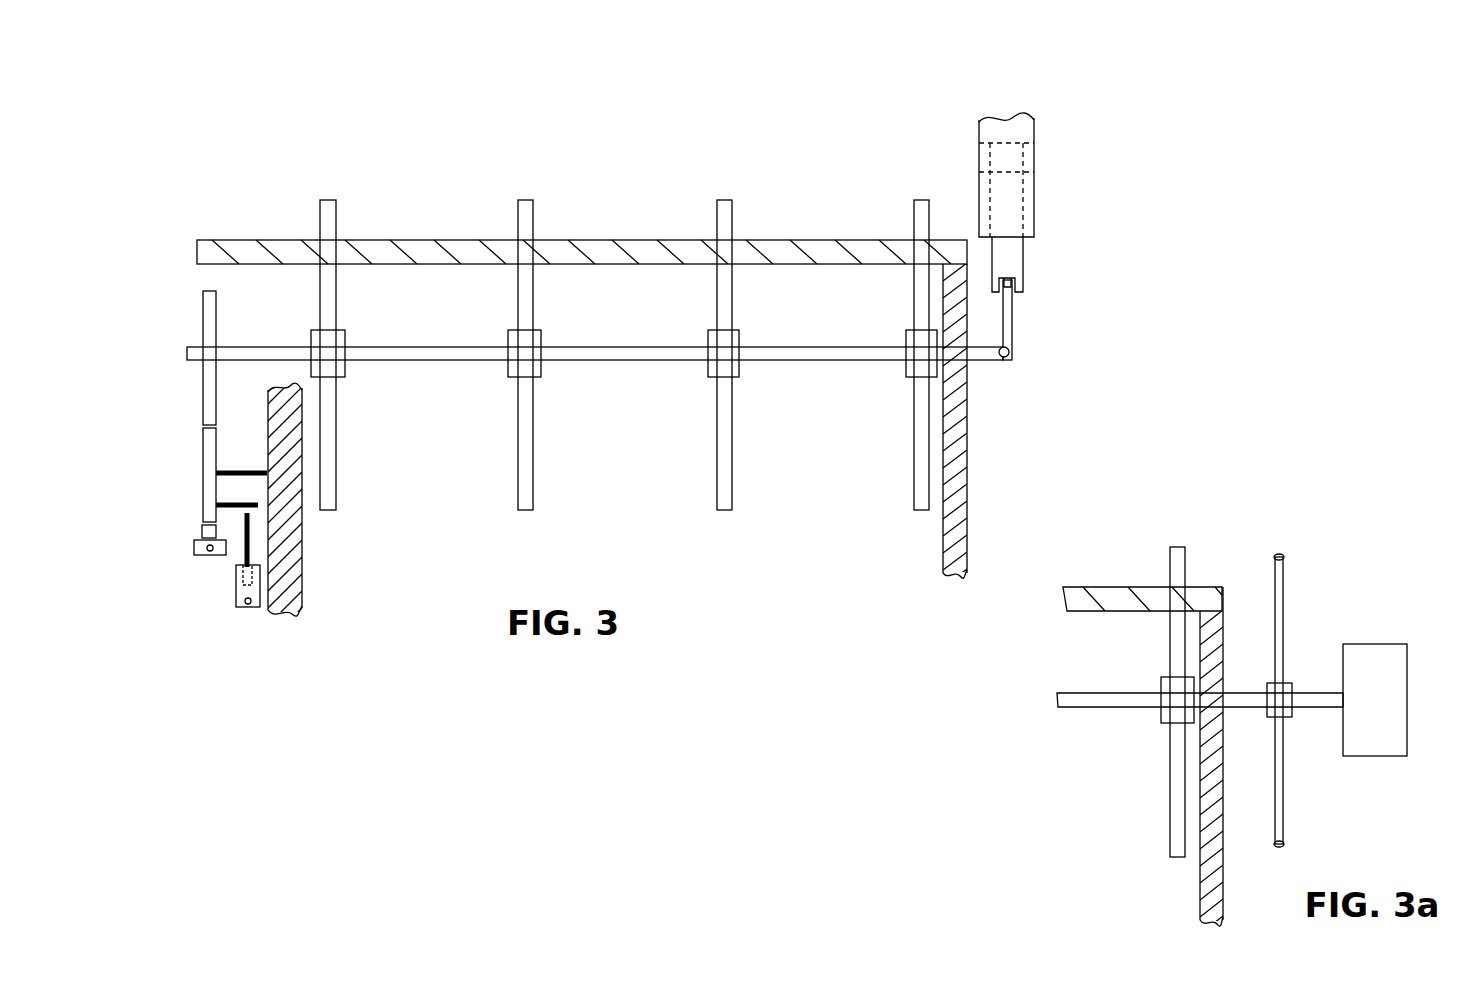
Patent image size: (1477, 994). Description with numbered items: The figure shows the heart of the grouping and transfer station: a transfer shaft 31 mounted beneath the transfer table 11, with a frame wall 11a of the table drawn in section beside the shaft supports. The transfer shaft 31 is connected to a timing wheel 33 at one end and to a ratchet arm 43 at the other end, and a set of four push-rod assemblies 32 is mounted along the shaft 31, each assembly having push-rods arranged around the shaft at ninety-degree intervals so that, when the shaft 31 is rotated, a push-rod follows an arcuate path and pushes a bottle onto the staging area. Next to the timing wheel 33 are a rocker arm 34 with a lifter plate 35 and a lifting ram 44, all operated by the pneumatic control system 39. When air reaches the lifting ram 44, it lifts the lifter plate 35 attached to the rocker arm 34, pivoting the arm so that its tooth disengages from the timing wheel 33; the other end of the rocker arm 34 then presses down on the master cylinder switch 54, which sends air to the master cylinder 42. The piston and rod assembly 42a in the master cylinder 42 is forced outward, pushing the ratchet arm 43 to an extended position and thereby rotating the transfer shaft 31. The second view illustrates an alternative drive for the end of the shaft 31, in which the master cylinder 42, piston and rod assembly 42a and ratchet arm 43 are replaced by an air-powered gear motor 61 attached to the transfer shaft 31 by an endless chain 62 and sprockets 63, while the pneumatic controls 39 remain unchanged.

In FIG. 3, the transfer table 11 is at (426, 246).
In FIG. 3A, the transfer table 11 is at (1142, 599).
In FIG. 3, the frame wall 11a is at (290, 580).
In FIG. 3A, the frame wall 11a is at (1212, 860).
In FIG. 3, the transfer shaft 31 is at (647, 360).
In FIG. 3A, the transfer shaft 31 is at (1258, 707).
In FIG. 3, the push-rod assembly 32 is at (328, 213).
In FIG. 3A, the push-rod assembly 32 is at (1177, 702).
In FIG. 3, the timing wheel 33 is at (205, 317).
In FIG. 3, the rocker arm 34 is at (203, 492).
In FIG. 3, the lifter plate 35 is at (232, 553).
In FIG. 3, the pneumatic control system 39 is at (608, 160).
In FIG. 3, the master cylinder 42 is at (1015, 135).
In FIG. 3, the piston and rod assembly 42a is at (1012, 205).
In FIG. 3, the ratchet arm 43 is at (1010, 328).
In FIG. 3, the lifting ram 44 is at (253, 563).
In FIG. 3, the master cylinder switch 54 is at (200, 555).
In FIG. 3A, the air-powered gear motor 61 is at (1410, 700).
In FIG. 3A, the endless chain 62 is at (1282, 553).
In FIG. 3A, the sprockets 63 is at (1285, 608).